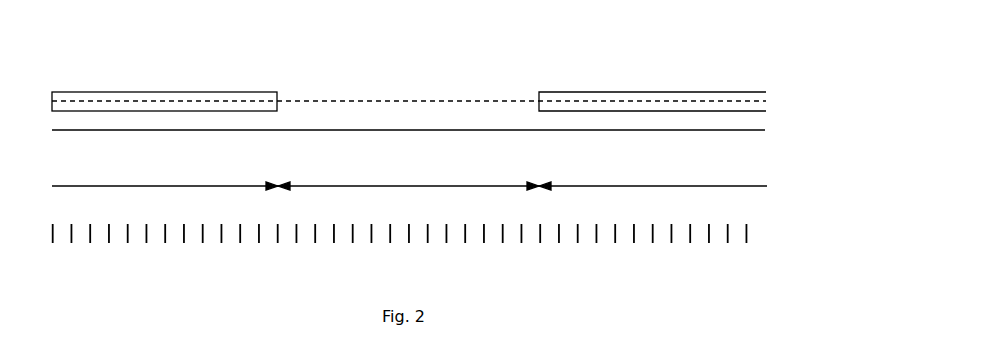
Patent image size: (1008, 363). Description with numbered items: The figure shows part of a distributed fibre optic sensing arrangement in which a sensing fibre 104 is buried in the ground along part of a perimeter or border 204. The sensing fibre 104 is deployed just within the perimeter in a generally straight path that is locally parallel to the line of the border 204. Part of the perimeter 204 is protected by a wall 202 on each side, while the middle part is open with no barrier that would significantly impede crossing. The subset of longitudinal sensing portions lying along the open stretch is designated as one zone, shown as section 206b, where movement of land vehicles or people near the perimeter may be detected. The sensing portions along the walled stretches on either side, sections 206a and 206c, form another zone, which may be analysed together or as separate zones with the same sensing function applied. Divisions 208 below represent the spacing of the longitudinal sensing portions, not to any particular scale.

The sensing fibre 104 is at (424, 130).
The wall 202 is at (409, 79).
The perimeter or border 204 is at (409, 79).
The section of sensing fibre along walled perimeter 206a is at (165, 175).
The section of sensing fibre along open perimeter 206b is at (408, 175).
The section of sensing fibre along walled perimeter 206c is at (653, 174).
The divisions 208 is at (400, 247).